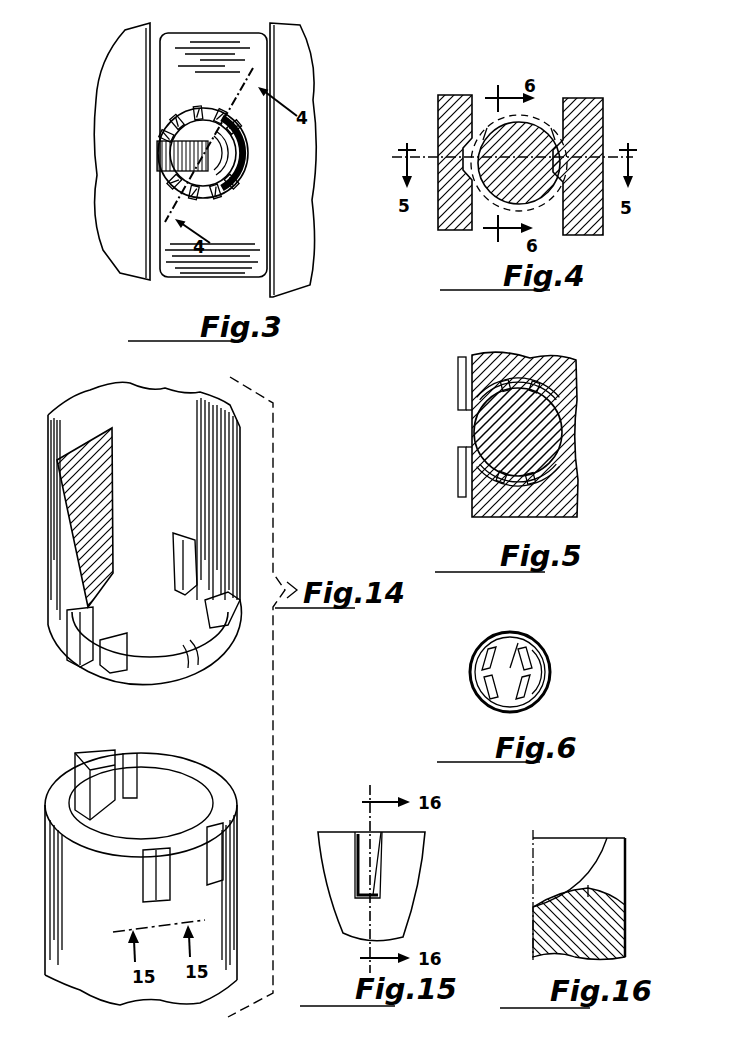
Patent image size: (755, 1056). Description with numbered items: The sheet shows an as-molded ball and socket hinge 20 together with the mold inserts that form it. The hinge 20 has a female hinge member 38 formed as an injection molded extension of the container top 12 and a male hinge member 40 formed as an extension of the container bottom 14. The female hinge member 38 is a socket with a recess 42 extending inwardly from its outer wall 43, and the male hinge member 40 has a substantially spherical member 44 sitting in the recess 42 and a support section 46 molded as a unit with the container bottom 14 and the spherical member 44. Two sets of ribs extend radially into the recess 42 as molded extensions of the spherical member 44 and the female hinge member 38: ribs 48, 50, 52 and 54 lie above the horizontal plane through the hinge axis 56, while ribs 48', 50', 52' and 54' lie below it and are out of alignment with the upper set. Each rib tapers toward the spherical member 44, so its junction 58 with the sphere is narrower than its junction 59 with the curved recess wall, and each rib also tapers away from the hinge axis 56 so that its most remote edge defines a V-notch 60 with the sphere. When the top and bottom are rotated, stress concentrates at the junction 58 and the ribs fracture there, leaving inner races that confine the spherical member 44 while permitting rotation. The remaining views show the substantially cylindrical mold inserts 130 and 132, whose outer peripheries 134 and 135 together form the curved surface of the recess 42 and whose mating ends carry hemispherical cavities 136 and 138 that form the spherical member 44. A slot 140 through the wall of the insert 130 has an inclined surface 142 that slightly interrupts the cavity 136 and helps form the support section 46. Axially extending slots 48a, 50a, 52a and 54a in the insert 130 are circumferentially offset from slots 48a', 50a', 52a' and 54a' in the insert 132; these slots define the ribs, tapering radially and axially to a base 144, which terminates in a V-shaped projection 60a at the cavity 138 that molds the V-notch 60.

In FIG. 3, the container top 12 is at (292, 77).
In FIG. 3, the container bottom 14 is at (100, 180).
In FIG. 5, the container bottom 14 is at (458, 395).
In FIG. 3, the hinge 20 is at (180, 31).
In FIG. 3, the female hinge member 38 is at (175, 278).
In FIG. 4, the female hinge member 38 is at (595, 100).
In FIG. 5, the female hinge member 38 is at (575, 375).
In FIG. 3, the male hinge member 40 is at (170, 140).
In FIG. 5, the male hinge member 40 is at (470, 450).
In FIG. 3, the recess 42 is at (244, 146).
In FIG. 4, the recess 42 is at (519, 163).
In FIG. 5, the recess 42 is at (518, 432).
In FIG. 3, the outer wall 43 is at (157, 240).
In FIG. 3, the spherical member 44 is at (200, 110).
In FIG. 4, the spherical member 44 is at (520, 190).
In FIG. 5, the spherical member 44 is at (545, 432).
In FIG. 6, the spherical member 44 is at (512, 695).
In FIG. 3, the support section 46 is at (160, 153).
In FIG. 3, the rib 48 is at (175, 92).
In FIG. 5, the rib 48 is at (513, 359).
In FIG. 3, the rib 48' is at (143, 110).
In FIG. 3, the rib 50 is at (243, 119).
In FIG. 4, the rib 50 is at (635, 103).
In FIG. 5, the rib 50 is at (559, 359).
In FIG. 3, the rib 50' is at (224, 98).
In FIG. 4, the rib 50' is at (557, 205).
In FIG. 3, the rib 52 is at (239, 202).
In FIG. 5, the rib 52 is at (562, 486).
In FIG. 6, the rib 52 is at (551, 649).
In FIG. 3, the rib 52' is at (266, 183).
In FIG. 6, the rib 52' is at (554, 685).
In FIG. 3, the rib 54 is at (148, 188).
In FIG. 4, the rib 54 is at (439, 117).
In FIG. 5, the rib 54 is at (468, 494).
In FIG. 6, the rib 54 is at (464, 652).
In FIG. 3, the rib 54' is at (214, 207).
In FIG. 6, the rib 54' is at (462, 687).
In FIG. 6, the hinge axis 56 is at (518, 643).
In FIG. 4, the junction 58 is at (515, 130).
In FIG. 4, the junction 59 is at (605, 133).
In FIG. 4, the V-notch 60 is at (487, 133).
In FIG. 14, the mold insert 130 is at (198, 395).
In FIG. 14, the mold insert 132 is at (225, 975).
In FIG. 15, the mold insert 132 is at (405, 930).
In FIG. 14, the outer periphery 134 is at (238, 485).
In FIG. 14, the outer periphery 135 is at (238, 890).
In FIG. 14, the hemispherical cavity 136 is at (175, 640).
In FIG. 14, the hemispherical cavity 138 is at (180, 795).
In FIG. 16, the hemispherical cavity 138 is at (600, 860).
In FIG. 14, the slot 140 is at (113, 492).
In FIG. 14, the inclined surface 142 is at (78, 455).
In FIG. 15, the base 144 is at (378, 897).
In FIG. 16, the base 144 is at (610, 900).
In FIG. 14, the axially extending slot 48a is at (55, 637).
In FIG. 14, the axially extending slot 50a is at (121, 667).
In FIG. 14, the axially extending slot 52a is at (238, 603).
In FIG. 14, the axially extending slot 54a is at (182, 549).
In FIG. 14, the axially extending slot 48a' is at (77, 780).
In FIG. 14, the axially extending slot 50a' is at (153, 759).
In FIG. 14, the axially extending slot 52a' is at (239, 843).
In FIG. 14, the axially extending slot 54a' is at (132, 875).
In FIG. 15, the axially extending slot 54a' is at (349, 847).
In FIG. 16, the V-shaped projection 60a is at (588, 893).